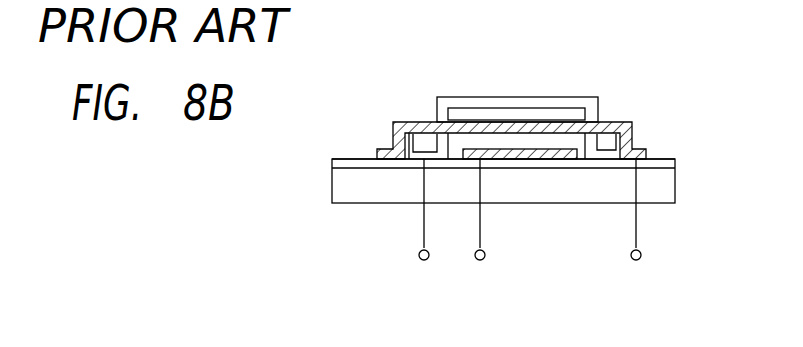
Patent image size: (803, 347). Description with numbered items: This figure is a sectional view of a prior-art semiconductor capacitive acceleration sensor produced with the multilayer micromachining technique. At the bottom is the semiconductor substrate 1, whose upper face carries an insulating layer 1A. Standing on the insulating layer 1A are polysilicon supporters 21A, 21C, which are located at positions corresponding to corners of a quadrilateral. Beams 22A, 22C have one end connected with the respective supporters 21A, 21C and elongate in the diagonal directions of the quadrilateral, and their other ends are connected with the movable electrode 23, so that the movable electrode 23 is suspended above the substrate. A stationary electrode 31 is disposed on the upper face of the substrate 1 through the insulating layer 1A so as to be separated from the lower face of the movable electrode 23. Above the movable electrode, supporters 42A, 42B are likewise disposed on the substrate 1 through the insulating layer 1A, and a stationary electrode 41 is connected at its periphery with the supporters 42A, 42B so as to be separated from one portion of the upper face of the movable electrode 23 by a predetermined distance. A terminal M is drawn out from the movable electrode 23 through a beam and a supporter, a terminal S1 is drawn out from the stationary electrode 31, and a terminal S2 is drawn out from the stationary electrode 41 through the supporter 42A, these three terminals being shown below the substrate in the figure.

The semiconductor substrate 1 is at (670, 193).
The insulating layer 1A is at (670, 163).
The supporter 21A is at (632, 130).
The supporter 21C is at (393, 135).
The beam 22A is at (630, 121).
The beam 22C is at (410, 119).
The movable electrode 23 is at (512, 110).
The stationary electrode 31 is at (536, 160).
The stationary electrode 41 is at (578, 97).
The supporter 42A is at (434, 103).
The supporter 42B is at (600, 102).
The terminal S1 is at (480, 227).
The terminal S2 is at (424, 227).
The terminal M is at (637, 226).